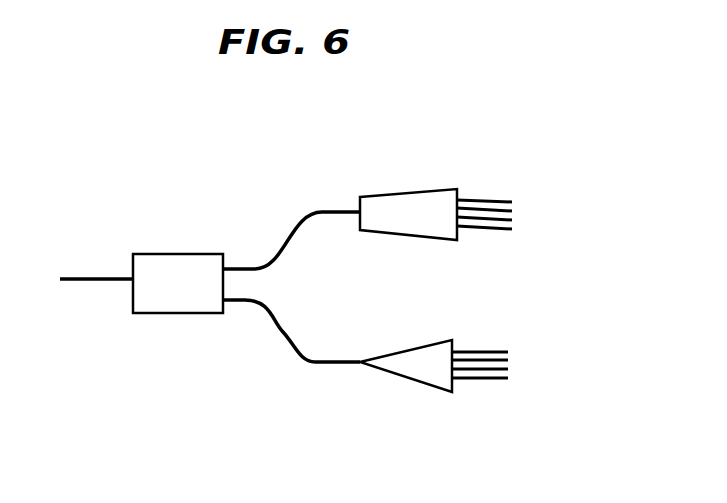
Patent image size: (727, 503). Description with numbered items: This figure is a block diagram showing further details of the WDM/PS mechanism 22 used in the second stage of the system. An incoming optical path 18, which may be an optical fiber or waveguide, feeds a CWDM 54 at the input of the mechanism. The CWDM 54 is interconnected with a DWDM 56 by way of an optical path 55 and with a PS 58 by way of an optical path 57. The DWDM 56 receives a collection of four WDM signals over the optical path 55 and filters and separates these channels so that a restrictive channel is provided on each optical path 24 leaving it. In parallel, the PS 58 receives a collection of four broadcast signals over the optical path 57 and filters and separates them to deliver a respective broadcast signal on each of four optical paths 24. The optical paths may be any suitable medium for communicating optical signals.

The WDM/PS mechanism 22 is at (250, 122).
The optical path 18 is at (97, 279).
The CWDM 54 is at (176, 254).
The optical path 55 is at (290, 237).
The DWDM 56 is at (410, 192).
The optical path 24 is at (488, 200).
The optical path 57 is at (284, 331).
The PS 58 is at (405, 377).